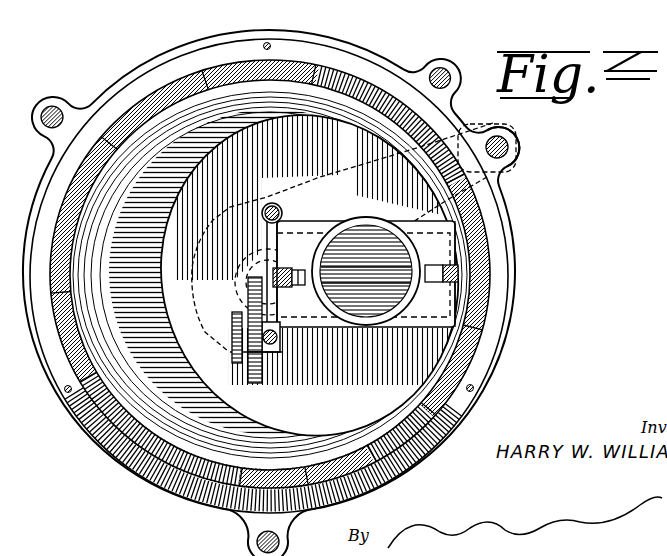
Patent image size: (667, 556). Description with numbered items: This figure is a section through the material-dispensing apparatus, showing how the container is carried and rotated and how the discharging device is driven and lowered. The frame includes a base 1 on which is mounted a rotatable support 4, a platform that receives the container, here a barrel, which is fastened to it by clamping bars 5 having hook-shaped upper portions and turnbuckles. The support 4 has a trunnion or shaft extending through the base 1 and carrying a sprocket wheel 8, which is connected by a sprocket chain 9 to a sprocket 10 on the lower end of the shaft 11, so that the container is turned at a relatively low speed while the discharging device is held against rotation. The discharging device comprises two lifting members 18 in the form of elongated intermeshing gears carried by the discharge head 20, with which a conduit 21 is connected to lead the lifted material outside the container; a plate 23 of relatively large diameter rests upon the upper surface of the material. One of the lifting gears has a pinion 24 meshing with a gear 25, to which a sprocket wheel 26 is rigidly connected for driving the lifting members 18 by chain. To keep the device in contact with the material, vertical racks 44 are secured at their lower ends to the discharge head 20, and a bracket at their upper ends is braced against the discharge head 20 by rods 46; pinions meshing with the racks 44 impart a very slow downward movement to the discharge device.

The base 1 is at (130, 78).
The rotatable support 4 is at (179, 62).
The clamping bars 5 is at (474, 390).
The sprocket wheel 8 is at (328, 191).
The sprocket chain 9 is at (310, 172).
The sprocket 10 is at (518, 163).
The shaft 11 is at (509, 148).
The lifting members 18 is at (387, 287).
The discharge head 20 is at (432, 303).
The conduit 21 is at (352, 218).
The plate 23 is at (344, 366).
The pinion 24 is at (248, 282).
The gear 25 is at (262, 380).
The sprocket wheel 26 is at (232, 353).
The vertical racks 44 is at (458, 277).
The rods 46 is at (265, 222).